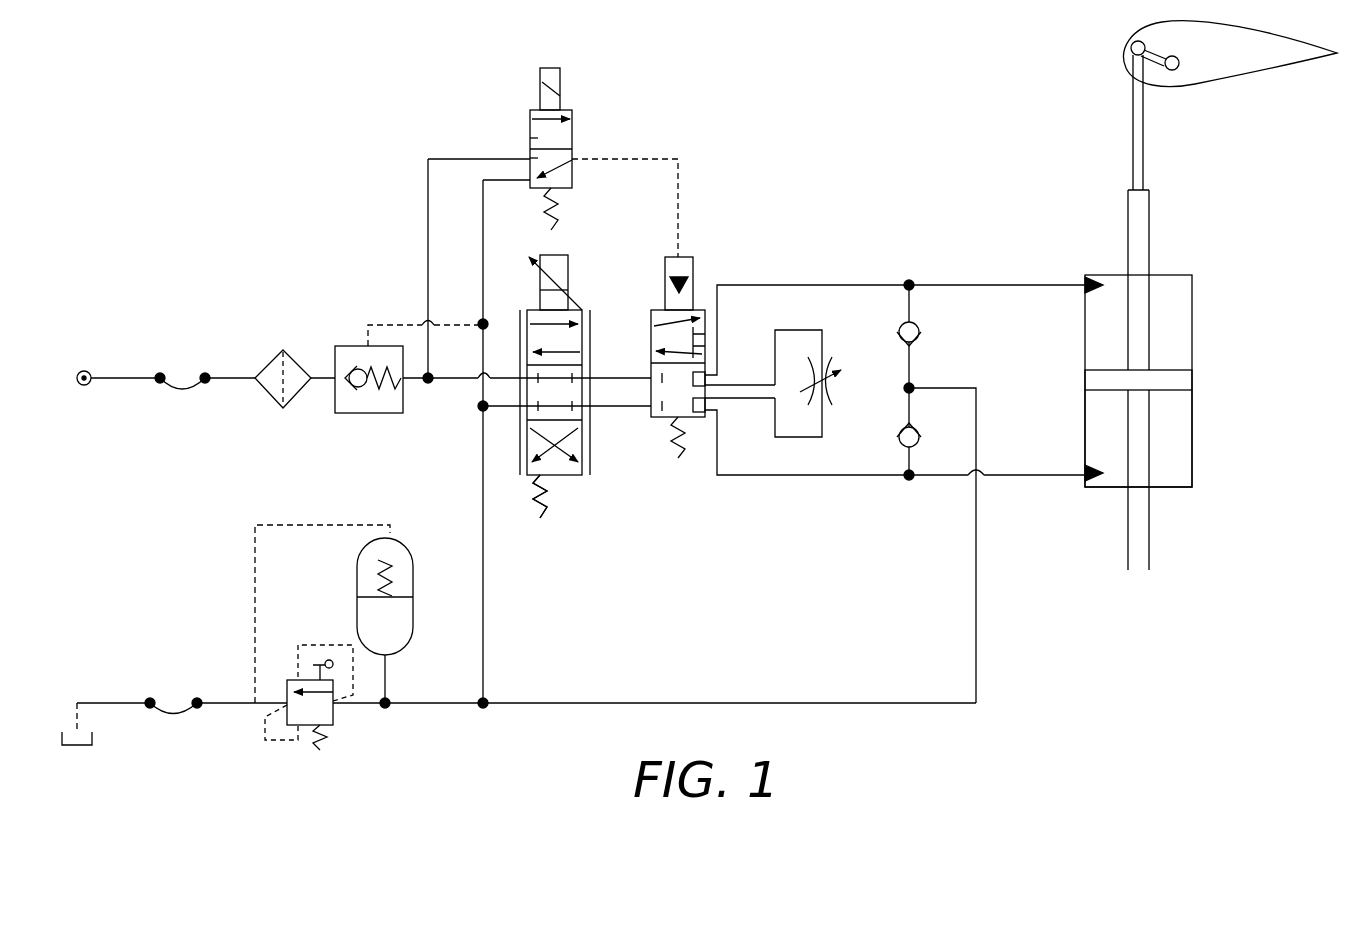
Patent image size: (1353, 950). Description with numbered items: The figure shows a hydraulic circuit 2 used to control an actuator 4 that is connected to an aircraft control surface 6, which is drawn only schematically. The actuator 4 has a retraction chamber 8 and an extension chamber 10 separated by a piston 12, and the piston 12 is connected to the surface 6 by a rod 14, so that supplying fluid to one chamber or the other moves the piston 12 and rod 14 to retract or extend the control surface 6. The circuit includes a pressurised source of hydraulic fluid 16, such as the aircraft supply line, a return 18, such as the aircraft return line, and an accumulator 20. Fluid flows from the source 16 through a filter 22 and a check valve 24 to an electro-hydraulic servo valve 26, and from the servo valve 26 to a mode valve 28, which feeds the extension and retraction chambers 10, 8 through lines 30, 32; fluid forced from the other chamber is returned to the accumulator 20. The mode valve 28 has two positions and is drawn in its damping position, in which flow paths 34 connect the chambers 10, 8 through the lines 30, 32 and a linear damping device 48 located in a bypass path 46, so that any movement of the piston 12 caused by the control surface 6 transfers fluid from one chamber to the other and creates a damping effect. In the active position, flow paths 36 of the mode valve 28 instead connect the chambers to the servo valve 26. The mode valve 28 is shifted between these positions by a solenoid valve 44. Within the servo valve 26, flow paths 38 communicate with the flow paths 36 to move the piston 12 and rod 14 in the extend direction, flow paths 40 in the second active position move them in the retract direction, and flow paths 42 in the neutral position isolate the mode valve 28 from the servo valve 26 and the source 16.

The hydraulic circuit 2 is at (739, 247).
The actuator 4 is at (1211, 295).
The aircraft control surface 6 is at (1252, 72).
The retraction chamber 8 is at (1192, 300).
The extension chamber 10 is at (1192, 452).
The piston 12 is at (1192, 378).
The rod 14 is at (1145, 145).
The pressurised source of hydraulic fluid 16 is at (83, 370).
The return 18 is at (85, 750).
The accumulator 20 is at (410, 645).
The filter 22 is at (283, 350).
The check valve 24 is at (345, 346).
The electro-hydraulic servo valve 26 is at (577, 477).
The mode valve 28 is at (706, 420).
The hydraulic line 30 is at (808, 283).
The hydraulic line 32 is at (803, 478).
The flow paths 34 is at (700, 404).
The flow paths 36 is at (682, 350).
The flow paths 38 is at (548, 330).
The flow paths 40 is at (535, 447).
The flow paths 42 is at (318, 752).
The solenoid valve 44 is at (560, 78).
The bypass path 46 is at (750, 400).
The damping device 48 is at (836, 362).